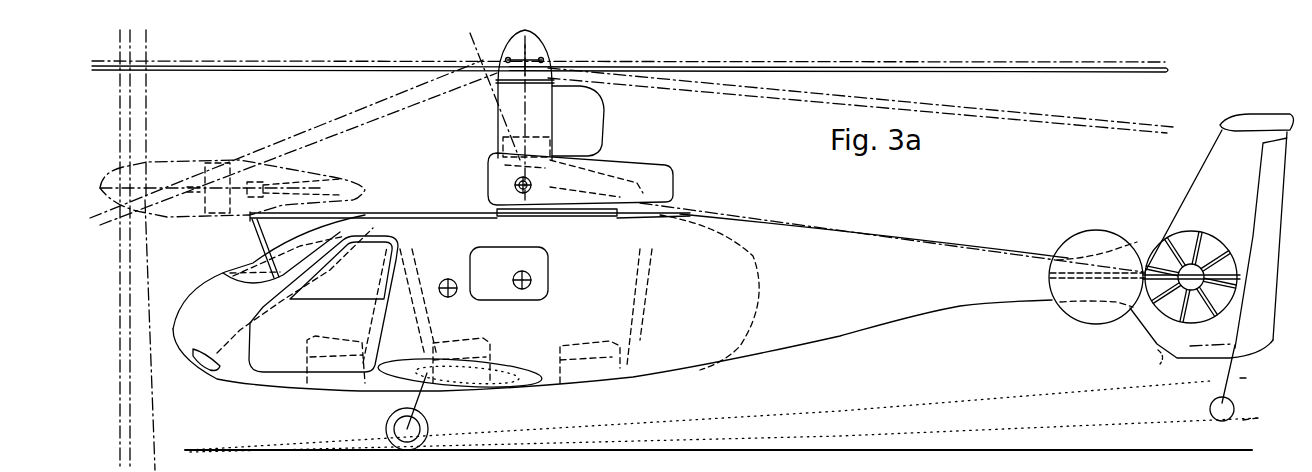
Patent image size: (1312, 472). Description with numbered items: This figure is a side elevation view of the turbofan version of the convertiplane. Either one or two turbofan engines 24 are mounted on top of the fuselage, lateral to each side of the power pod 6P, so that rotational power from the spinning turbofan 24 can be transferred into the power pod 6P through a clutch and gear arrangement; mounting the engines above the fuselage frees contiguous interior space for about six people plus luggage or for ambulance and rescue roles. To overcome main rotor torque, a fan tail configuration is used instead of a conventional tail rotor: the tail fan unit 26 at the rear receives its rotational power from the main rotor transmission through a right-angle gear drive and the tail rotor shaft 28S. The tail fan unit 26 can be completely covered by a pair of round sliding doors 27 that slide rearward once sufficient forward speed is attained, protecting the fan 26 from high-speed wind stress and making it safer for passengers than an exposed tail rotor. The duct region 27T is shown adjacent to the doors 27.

The power pod 6P is at (497, 120).
The turbofan engine 24 is at (633, 157).
The tail rotor shaft 28S is at (830, 231).
The round sliding doors 27 is at (1067, 238).
The tail fan unit 26 is at (1150, 260).
The tail rotor duct 27T is at (1078, 273).